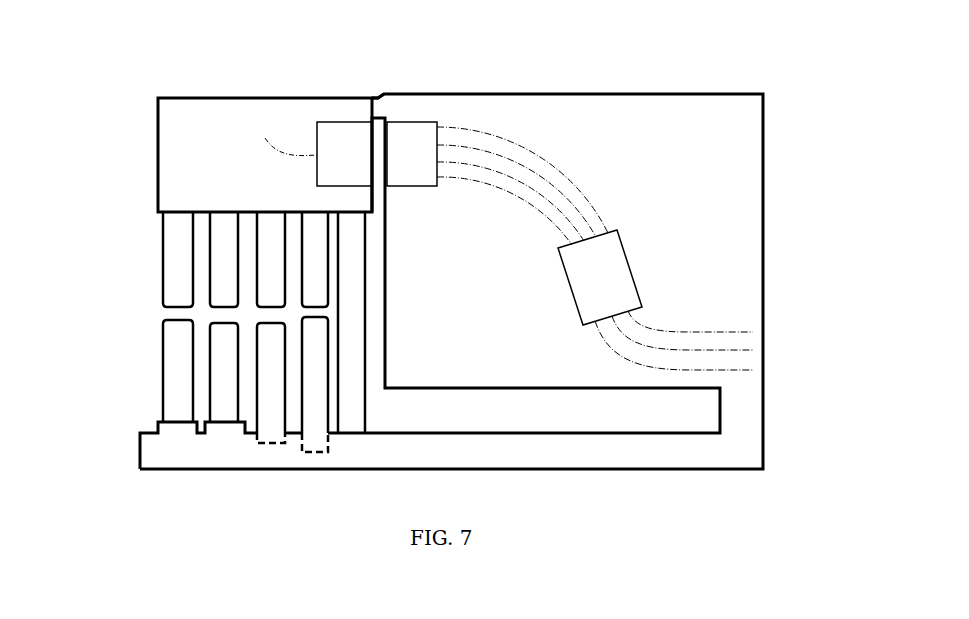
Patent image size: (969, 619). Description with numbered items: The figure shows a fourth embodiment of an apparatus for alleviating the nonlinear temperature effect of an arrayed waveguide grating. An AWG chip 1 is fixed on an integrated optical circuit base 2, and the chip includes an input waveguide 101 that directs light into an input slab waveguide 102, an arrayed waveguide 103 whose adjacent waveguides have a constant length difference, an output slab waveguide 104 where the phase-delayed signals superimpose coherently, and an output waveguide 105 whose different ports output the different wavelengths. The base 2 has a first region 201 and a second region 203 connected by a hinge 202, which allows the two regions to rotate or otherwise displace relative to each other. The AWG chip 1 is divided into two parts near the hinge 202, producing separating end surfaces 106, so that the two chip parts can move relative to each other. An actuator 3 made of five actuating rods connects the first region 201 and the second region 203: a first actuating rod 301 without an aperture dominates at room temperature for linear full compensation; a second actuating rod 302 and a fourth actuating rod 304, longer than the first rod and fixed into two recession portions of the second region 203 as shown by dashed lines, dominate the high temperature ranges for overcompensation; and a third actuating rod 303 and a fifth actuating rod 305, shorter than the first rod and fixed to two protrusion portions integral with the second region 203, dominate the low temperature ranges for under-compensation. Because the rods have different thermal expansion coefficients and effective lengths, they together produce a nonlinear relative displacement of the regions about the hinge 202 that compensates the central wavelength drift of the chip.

The AWG chip 1 is at (509, 258).
The base 2 is at (718, 163).
The actuator 3 is at (206, 332).
The first actuating rod 301 is at (350, 238).
The second actuating rod 302 is at (273, 355).
The third actuating rod 303 is at (227, 300).
The fourth actuating rod 304 is at (317, 382).
The fifth actuating rod 305 is at (182, 283).
The input waveguide 101 is at (265, 138).
The input slab waveguide 102 is at (417, 137).
The arrayed waveguide 103 is at (532, 183).
The output slab waveguide 104 is at (613, 270).
The output waveguide 105 is at (637, 345).
The separating end surface of the chip 106 is at (378, 147).
The first region of the base 201 is at (184, 140).
The hinge 202 is at (373, 105).
The second region of the base 203 is at (739, 277).